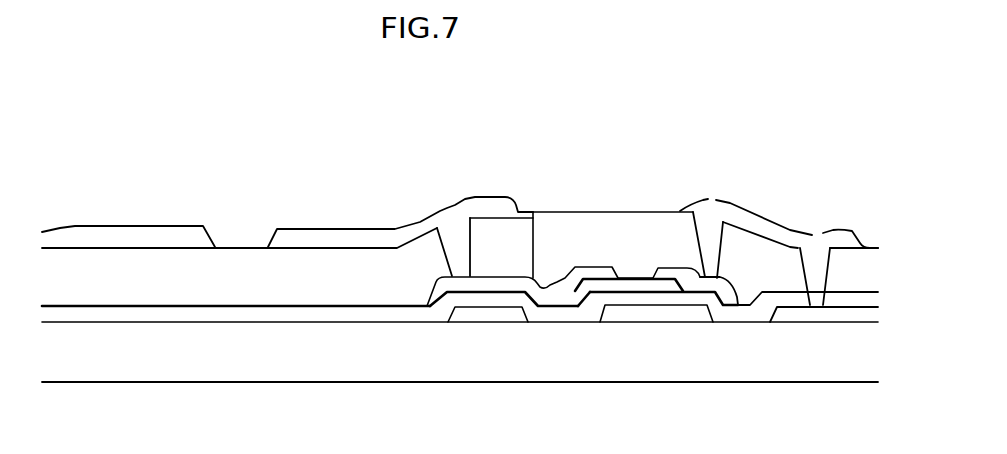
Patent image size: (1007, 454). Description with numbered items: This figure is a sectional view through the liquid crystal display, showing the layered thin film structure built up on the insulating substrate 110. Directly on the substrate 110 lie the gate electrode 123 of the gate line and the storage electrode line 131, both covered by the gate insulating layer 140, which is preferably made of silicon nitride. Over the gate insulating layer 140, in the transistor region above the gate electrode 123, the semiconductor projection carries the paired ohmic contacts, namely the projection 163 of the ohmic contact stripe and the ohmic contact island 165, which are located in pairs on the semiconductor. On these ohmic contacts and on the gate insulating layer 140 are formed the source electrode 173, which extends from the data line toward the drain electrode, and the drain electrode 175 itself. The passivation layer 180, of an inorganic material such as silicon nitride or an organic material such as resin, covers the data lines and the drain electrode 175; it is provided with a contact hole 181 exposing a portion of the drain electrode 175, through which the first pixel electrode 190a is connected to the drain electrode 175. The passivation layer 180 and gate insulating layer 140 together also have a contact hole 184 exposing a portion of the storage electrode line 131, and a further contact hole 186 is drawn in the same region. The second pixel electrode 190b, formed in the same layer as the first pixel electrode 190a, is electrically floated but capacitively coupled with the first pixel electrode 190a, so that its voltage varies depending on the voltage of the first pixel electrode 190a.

The insulating substrate 110 is at (211, 364).
The gate insulating layer 140 is at (303, 310).
The passivation layer 180 is at (594, 226).
The first pixel electrode 190a is at (133, 237).
The second pixel electrode 190b is at (320, 237).
The contact hole 181 is at (449, 207).
The drain electrode 175 is at (523, 282).
The ohmic contact island 165 is at (574, 291).
The projection of ohmic contact stripe 163 is at (666, 283).
The source electrode 173 is at (660, 268).
The storage electrode line 131 is at (492, 312).
The gate electrode 123 is at (625, 315).
The contact hole 186 is at (716, 203).
The contact hole 184 is at (813, 233).